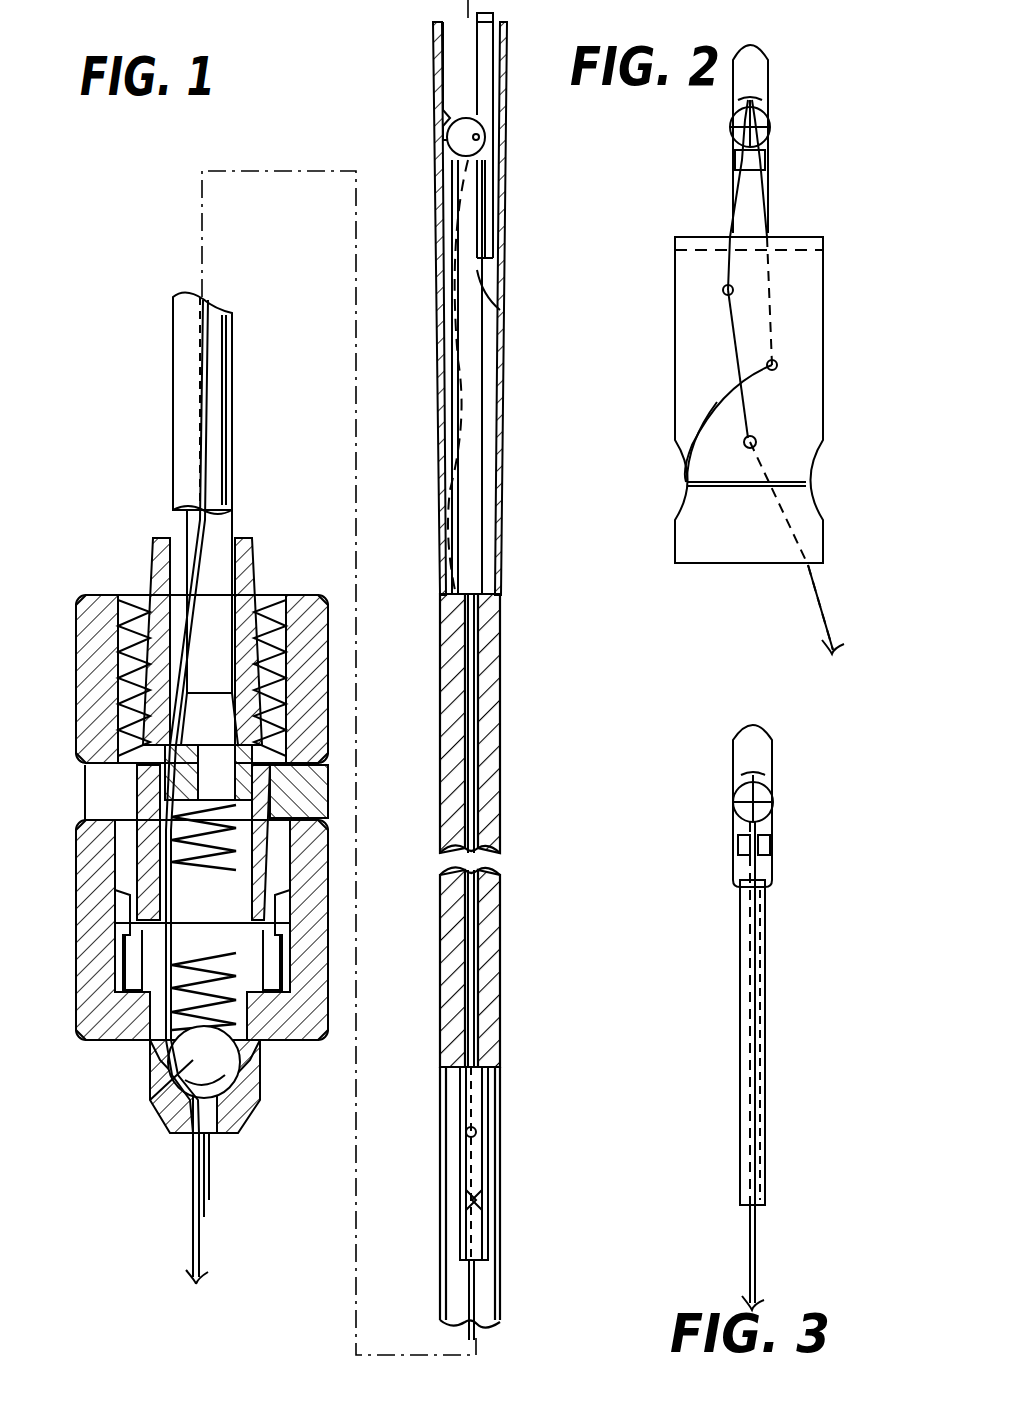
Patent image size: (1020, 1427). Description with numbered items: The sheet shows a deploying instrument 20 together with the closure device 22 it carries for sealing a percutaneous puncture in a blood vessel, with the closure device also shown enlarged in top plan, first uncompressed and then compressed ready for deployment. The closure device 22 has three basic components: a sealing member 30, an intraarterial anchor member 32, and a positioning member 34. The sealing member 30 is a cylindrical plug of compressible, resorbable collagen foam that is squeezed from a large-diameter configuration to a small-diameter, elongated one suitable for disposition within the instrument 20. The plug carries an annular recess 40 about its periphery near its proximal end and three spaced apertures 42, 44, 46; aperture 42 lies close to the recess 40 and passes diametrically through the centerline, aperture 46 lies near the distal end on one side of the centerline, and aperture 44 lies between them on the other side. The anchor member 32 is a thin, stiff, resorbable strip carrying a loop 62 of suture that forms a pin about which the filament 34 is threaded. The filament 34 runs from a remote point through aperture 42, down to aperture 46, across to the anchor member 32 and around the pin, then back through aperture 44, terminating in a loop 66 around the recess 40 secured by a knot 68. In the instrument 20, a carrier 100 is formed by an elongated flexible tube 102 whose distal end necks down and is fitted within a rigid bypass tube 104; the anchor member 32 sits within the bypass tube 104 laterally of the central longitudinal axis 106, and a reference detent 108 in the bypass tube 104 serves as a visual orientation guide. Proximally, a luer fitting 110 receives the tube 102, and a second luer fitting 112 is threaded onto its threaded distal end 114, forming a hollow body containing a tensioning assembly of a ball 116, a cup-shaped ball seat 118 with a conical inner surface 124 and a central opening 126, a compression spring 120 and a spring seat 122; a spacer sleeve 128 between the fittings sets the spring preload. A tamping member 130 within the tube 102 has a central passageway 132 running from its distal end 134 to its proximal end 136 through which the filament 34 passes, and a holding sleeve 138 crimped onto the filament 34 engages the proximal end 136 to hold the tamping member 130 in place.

In FIG. 1, the instrument 20 is at (148, 377).
In FIG. 1, the closure device 22 is at (457, 23).
In FIG. 2, the closure device 22 is at (700, 330).
In FIG. 3, the closure device 22 is at (730, 868).
In FIG. 1, the sealing member 30 is at (478, 498).
In FIG. 2, the sealing member 30 is at (735, 540).
In FIG. 3, the sealing member 30 is at (780, 1000).
In FIG. 1, the anchor member 32 is at (488, 216).
In FIG. 2, the anchor member 32 is at (770, 53).
In FIG. 3, the anchor member 32 is at (775, 738).
In FIG. 1, the positioning member 34 is at (190, 1235).
In FIG. 2, the positioning member 34 is at (770, 215).
In FIG. 3, the positioning member 34 is at (772, 868).
In FIG. 2, the annular recess 40 is at (680, 510).
In FIG. 2, the aperture 42 is at (758, 442).
In FIG. 2, the aperture 44 is at (777, 370).
In FIG. 2, the aperture 46 is at (725, 285).
In FIG. 2, the loop 62 is at (772, 118).
In FIG. 3, the loop 62 is at (775, 800).
In FIG. 2, the loop 66 is at (700, 440).
In FIG. 2, the knot 68 is at (688, 483).
In FIG. 1, the carrier 100 is at (180, 448).
In FIG. 1, the tube 102 is at (498, 308).
In FIG. 1, the bypass tube 104 is at (508, 162).
In FIG. 1, the central longitudinal axis 106 is at (205, 205).
In FIG. 1, the reference detent 108 is at (444, 120).
In FIG. 1, the luer fitting 110 is at (243, 600).
In FIG. 1, the luer fitting 112 is at (300, 1025).
In FIG. 1, the threaded distal end 114 is at (125, 1030).
In FIG. 1, the ball 116 is at (185, 1078).
In FIG. 1, the ball seat 118 is at (248, 1096).
In FIG. 1, the compression spring 120 is at (242, 990).
In FIG. 1, the spring seat 122 is at (245, 770).
In FIG. 1, the conical inner surface 124 is at (240, 1130).
In FIG. 1, the central opening 126 is at (210, 1140).
In FIG. 1, the spacer sleeve 128 is at (329, 795).
In FIG. 1, the tamping member 130 is at (493, 790).
In FIG. 1, the central passageway 132 is at (475, 965).
In FIG. 1, the distal end 134 is at (480, 598).
In FIG. 1, the proximal end 136 is at (500, 1092).
In FIG. 1, the holding sleeve 138 is at (480, 1160).